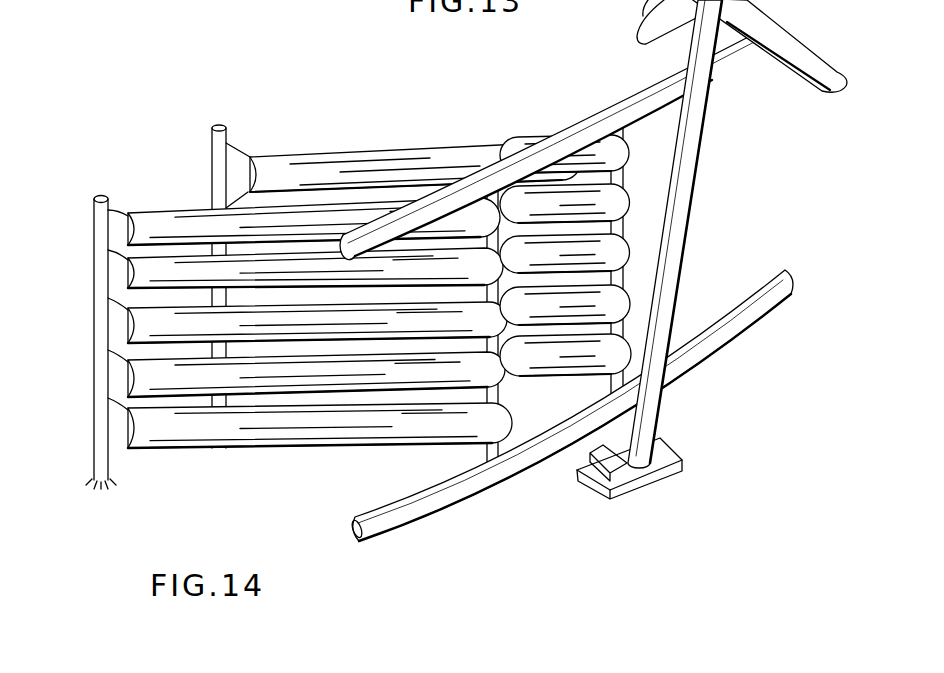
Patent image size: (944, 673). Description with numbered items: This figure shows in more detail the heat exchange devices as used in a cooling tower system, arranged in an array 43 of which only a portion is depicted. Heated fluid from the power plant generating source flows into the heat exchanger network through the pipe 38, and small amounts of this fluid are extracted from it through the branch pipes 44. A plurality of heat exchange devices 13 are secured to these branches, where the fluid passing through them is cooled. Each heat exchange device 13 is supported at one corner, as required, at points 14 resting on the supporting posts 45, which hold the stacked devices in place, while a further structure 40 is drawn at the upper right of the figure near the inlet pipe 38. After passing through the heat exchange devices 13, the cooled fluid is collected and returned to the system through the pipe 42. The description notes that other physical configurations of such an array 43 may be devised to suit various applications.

The heat exchange devices 13 is at (178, 270).
The points 14 is at (104, 213).
The pipe 38 is at (664, 92).
The stand 40 is at (839, 47).
The pipe 42 is at (750, 330).
The array 43 is at (381, 297).
The branch pipes 44 is at (523, 180).
The supporting posts 45 is at (93, 318).